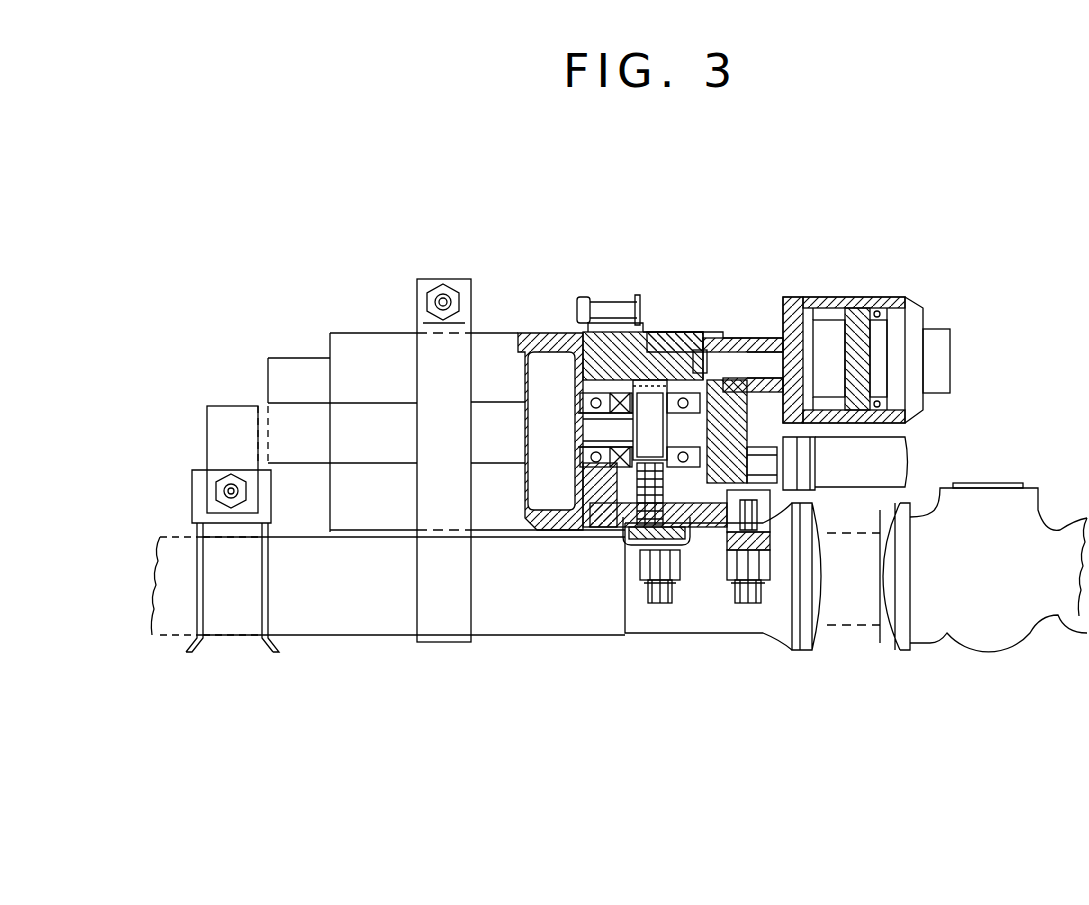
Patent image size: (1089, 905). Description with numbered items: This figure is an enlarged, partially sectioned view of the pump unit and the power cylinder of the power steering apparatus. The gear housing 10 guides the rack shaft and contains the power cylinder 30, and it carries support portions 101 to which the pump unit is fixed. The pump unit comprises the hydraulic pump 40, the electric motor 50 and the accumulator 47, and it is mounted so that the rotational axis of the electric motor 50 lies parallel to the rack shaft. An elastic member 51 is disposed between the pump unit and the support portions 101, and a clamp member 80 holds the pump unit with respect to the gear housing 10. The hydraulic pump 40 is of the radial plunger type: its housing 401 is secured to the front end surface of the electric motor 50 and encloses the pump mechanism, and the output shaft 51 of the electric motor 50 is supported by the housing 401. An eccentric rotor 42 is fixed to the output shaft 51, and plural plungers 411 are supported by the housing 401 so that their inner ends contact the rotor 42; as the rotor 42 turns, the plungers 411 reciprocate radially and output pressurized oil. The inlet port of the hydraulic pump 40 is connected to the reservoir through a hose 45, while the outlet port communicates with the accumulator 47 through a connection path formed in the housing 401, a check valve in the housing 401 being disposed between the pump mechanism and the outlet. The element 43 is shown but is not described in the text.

The gear housing 10 is at (693, 620).
The power cylinder 30 is at (328, 618).
The hydraulic pump 40 is at (678, 322).
The housing 401 is at (683, 340).
The plungers 411 is at (630, 482).
The eccentric rotor 42 is at (650, 403).
The coupling nut 43 is at (743, 453).
The hose 45 is at (893, 457).
The accumulator 47 is at (854, 296).
The electric motor 50 is at (543, 376).
The elastic member / output shaft 51 is at (595, 422).
The clamp member 80 is at (350, 403).
The support portions 101 is at (647, 560).